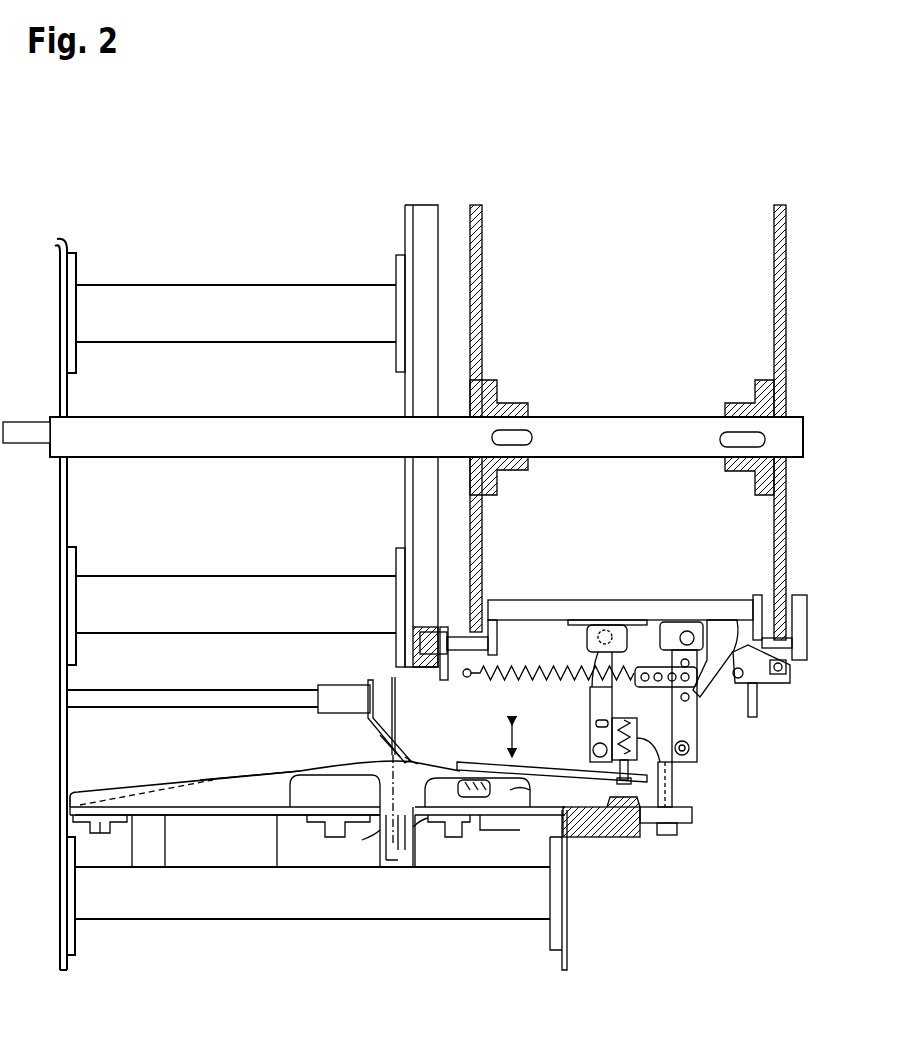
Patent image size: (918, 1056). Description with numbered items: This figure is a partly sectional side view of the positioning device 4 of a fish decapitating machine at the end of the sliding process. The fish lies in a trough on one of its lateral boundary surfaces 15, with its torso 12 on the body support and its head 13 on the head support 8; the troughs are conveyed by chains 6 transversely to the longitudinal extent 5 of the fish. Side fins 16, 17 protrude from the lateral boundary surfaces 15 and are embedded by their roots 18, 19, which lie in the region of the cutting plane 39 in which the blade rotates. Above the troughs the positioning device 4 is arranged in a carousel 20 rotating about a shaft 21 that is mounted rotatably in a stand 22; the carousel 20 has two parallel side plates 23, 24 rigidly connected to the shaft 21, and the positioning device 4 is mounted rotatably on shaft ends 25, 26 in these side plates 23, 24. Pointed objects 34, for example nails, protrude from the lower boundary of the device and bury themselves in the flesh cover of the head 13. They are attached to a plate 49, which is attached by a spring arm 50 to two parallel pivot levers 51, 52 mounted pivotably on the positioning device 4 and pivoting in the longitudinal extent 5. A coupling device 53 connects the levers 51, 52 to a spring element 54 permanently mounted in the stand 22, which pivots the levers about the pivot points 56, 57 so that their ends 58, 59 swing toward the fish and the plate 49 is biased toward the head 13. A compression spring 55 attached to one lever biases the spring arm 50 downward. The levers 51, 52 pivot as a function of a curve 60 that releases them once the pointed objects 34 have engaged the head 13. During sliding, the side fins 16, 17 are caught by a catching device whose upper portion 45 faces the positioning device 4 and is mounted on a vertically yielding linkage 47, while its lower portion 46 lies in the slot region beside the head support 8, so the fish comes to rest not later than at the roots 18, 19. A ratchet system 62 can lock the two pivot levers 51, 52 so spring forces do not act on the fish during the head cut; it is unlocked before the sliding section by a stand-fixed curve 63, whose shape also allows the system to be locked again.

The positioning device 4 is at (592, 538).
The longitudinal extent 5 is at (263, 777).
The chains 6 is at (502, 803).
The head support 8 is at (523, 790).
The torso 12 is at (203, 797).
The head 13 is at (482, 765).
The lateral boundary surfaces 15 is at (292, 773).
The side fin 16 is at (368, 713).
The side fin 17 is at (390, 837).
The root 18 is at (408, 757).
The root 19 is at (417, 827).
The carousel 20 is at (481, 507).
The shaft 21 is at (645, 428).
The stand 22 is at (418, 390).
The side plate 23 is at (478, 297).
The side plate 24 is at (777, 278).
The shaft end 25 is at (455, 632).
The shaft end 26 is at (767, 683).
The pointed objects 34 is at (453, 768).
The cutting plane 39 is at (390, 693).
The upper portion 45 is at (390, 743).
The lower portion 46 is at (362, 840).
The linkage 47 is at (318, 690).
The plate 49 is at (468, 760).
The spring arm 50 is at (595, 832).
The pivot lever 51 is at (600, 693).
The pivot lever 52 is at (682, 710).
The coupling device 53 is at (645, 670).
The spring element 54 is at (530, 665).
The compression spring 55 is at (672, 783).
The pivot point 56 is at (594, 625).
The pivot point 57 is at (672, 622).
The end 58 is at (588, 752).
The end 59 is at (693, 752).
The curve 60 is at (632, 830).
The ratchet system 62 is at (712, 645).
The curve 63 is at (745, 648).